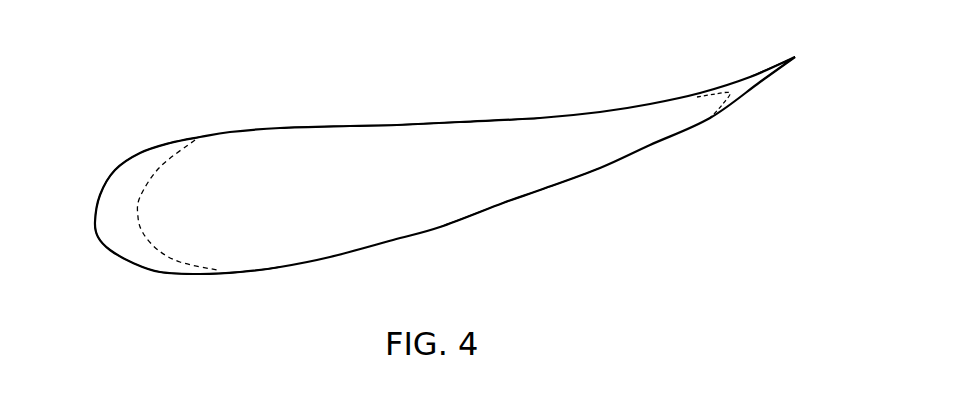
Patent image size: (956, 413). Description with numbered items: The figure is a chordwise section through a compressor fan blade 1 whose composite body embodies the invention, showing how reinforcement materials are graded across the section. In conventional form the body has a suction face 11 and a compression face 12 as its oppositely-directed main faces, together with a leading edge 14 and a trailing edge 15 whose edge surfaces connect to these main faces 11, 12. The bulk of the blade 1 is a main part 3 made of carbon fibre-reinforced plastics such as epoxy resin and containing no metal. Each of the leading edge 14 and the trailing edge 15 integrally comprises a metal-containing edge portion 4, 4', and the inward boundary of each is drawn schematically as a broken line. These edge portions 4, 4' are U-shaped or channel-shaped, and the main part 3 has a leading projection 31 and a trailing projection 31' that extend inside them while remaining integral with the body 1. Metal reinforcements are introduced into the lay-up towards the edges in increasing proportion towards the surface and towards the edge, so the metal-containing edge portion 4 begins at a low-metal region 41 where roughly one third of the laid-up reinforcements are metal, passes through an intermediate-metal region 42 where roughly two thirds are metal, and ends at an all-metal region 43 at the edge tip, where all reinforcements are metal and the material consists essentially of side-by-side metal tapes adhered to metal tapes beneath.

The compressor fan blade 1 is at (613, 182).
The main part 3 is at (477, 160).
The metal-containing edge portion 4 is at (145, 154).
The metal-containing edge portion 4' is at (772, 46).
The suction face 11 is at (503, 203).
The compression face 12 is at (397, 125).
The leading edge 14 is at (95, 217).
The trailing edge 15 is at (797, 60).
The leading projection 31 is at (193, 176).
The trailing projection 31' is at (694, 76).
The low-metal region 41 is at (225, 280).
The intermediate-metal region 42 is at (183, 283).
The all-metal region 43 is at (115, 258).